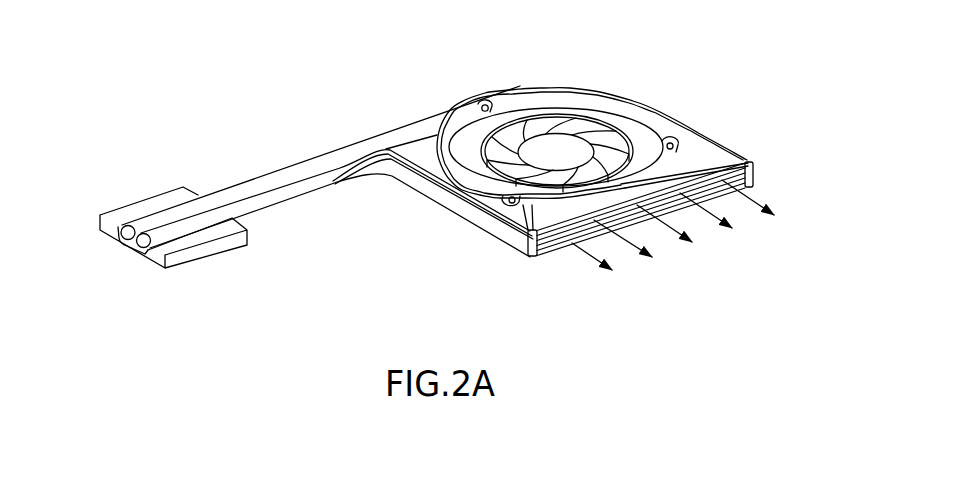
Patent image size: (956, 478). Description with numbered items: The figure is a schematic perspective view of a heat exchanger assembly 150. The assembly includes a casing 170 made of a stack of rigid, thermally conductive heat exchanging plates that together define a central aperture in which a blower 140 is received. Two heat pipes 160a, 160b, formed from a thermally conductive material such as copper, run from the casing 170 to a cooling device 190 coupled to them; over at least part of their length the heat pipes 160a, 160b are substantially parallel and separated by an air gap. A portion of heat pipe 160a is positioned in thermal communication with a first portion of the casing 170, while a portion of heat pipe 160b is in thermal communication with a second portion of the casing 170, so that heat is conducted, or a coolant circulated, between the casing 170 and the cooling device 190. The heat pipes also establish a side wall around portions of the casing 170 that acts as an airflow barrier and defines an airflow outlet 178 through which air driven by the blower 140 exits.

The blower 140 is at (552, 107).
The heat exchanger assembly 150 is at (660, 81).
The heat pipe 160a is at (306, 167).
The heat pipe 160b is at (313, 186).
The casing 170 is at (707, 160).
The airflow outlet 178 is at (685, 218).
The cooling device 190 is at (162, 198).